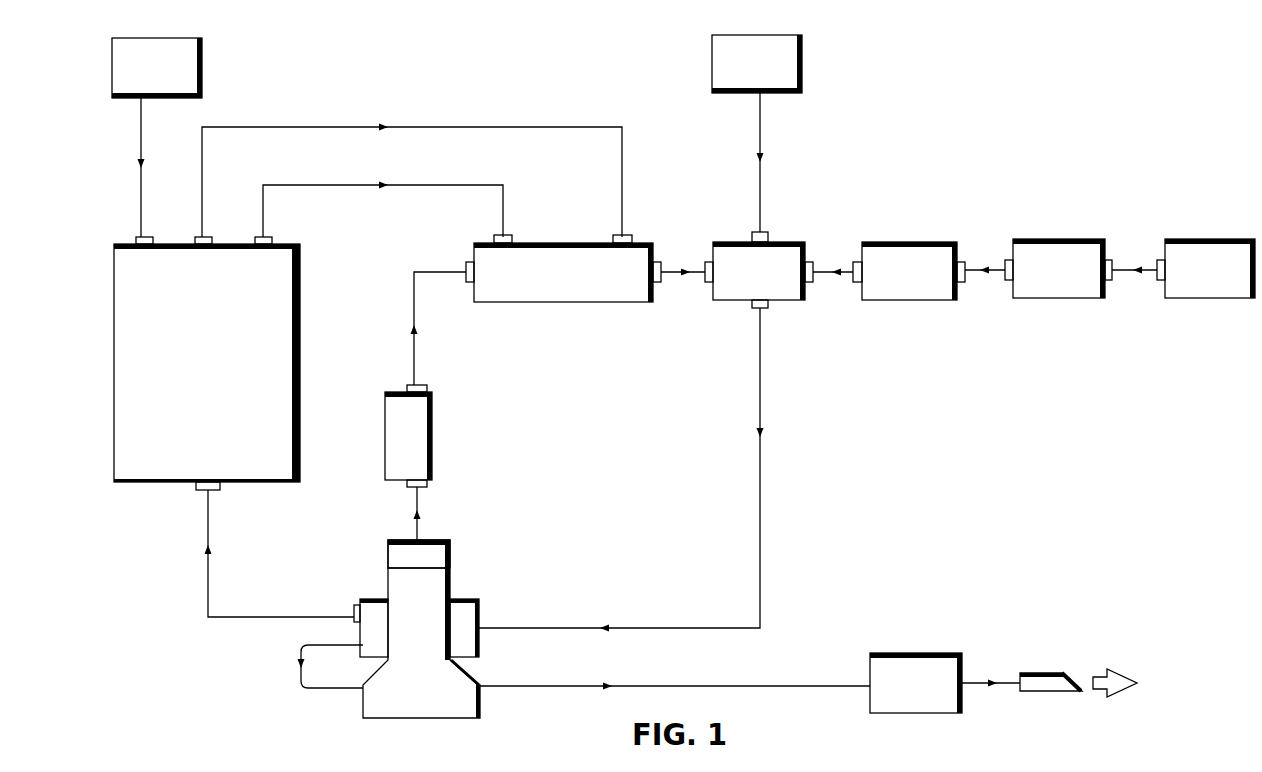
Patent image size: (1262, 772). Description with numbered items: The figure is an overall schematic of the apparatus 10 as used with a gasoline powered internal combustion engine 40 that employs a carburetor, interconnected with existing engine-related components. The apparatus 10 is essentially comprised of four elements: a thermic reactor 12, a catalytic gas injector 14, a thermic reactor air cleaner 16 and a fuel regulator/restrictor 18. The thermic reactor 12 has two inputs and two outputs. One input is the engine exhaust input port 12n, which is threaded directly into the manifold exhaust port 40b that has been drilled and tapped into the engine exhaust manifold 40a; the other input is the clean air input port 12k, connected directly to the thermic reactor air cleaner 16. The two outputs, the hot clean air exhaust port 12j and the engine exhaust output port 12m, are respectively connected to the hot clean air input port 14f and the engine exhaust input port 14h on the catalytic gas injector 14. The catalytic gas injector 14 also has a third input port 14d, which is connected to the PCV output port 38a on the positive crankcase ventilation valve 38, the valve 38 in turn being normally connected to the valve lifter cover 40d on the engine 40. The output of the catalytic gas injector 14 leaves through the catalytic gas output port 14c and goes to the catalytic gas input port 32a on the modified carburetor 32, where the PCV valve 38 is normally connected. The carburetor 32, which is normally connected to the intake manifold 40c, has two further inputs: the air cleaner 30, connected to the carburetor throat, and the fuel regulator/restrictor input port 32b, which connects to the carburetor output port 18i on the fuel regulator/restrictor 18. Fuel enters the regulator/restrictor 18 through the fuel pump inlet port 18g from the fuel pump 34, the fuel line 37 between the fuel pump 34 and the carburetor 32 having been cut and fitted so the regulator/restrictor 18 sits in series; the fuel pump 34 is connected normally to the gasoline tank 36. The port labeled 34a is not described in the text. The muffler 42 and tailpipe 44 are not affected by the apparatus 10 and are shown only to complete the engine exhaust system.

The apparatus 10 is at (956, 126).
The thermic reactor 12 is at (300, 357).
The hot clean air exhaust port 12j is at (283, 228).
The clean air input port 12k is at (137, 240).
The engine exhaust output port 12m is at (225, 228).
The engine exhaust input port 12n is at (212, 491).
The catalytic gas injector 14 is at (592, 303).
The catalytic gas output port 14c is at (673, 261).
The third input port 14d is at (466, 268).
The hot clean air input port 14f is at (508, 238).
The engine exhaust input port 14h is at (645, 230).
The thermic reactor air cleaner 16 is at (205, 70).
The fuel regulator/restrictor 18 is at (940, 302).
The fuel pump inlet port 18g is at (962, 284).
The carburetor output port 18i is at (861, 284).
The air cleaner 30 is at (803, 70).
The modified carburetor 32 is at (800, 302).
The catalytic gas input port 32a is at (708, 284).
The fuel regulator/restrictor input port 32b is at (814, 266).
The fuel pump 34 is at (1072, 300).
The filter outlet 34a is at (1011, 258).
The gasoline tank 36 is at (1238, 300).
The fuel line 37 is at (984, 268).
The positive crankcase ventilation valve 38 is at (434, 422).
The PCV output port 38a is at (424, 389).
The internal combustion engine 40 is at (460, 578).
The exhaust manifold 40a is at (363, 652).
The manifold exhaust port 40b is at (357, 603).
The intake manifold 40c is at (474, 618).
The valve lifter cover 40d is at (388, 557).
The muffler 42 is at (946, 714).
The tailpipe 44 is at (1043, 692).